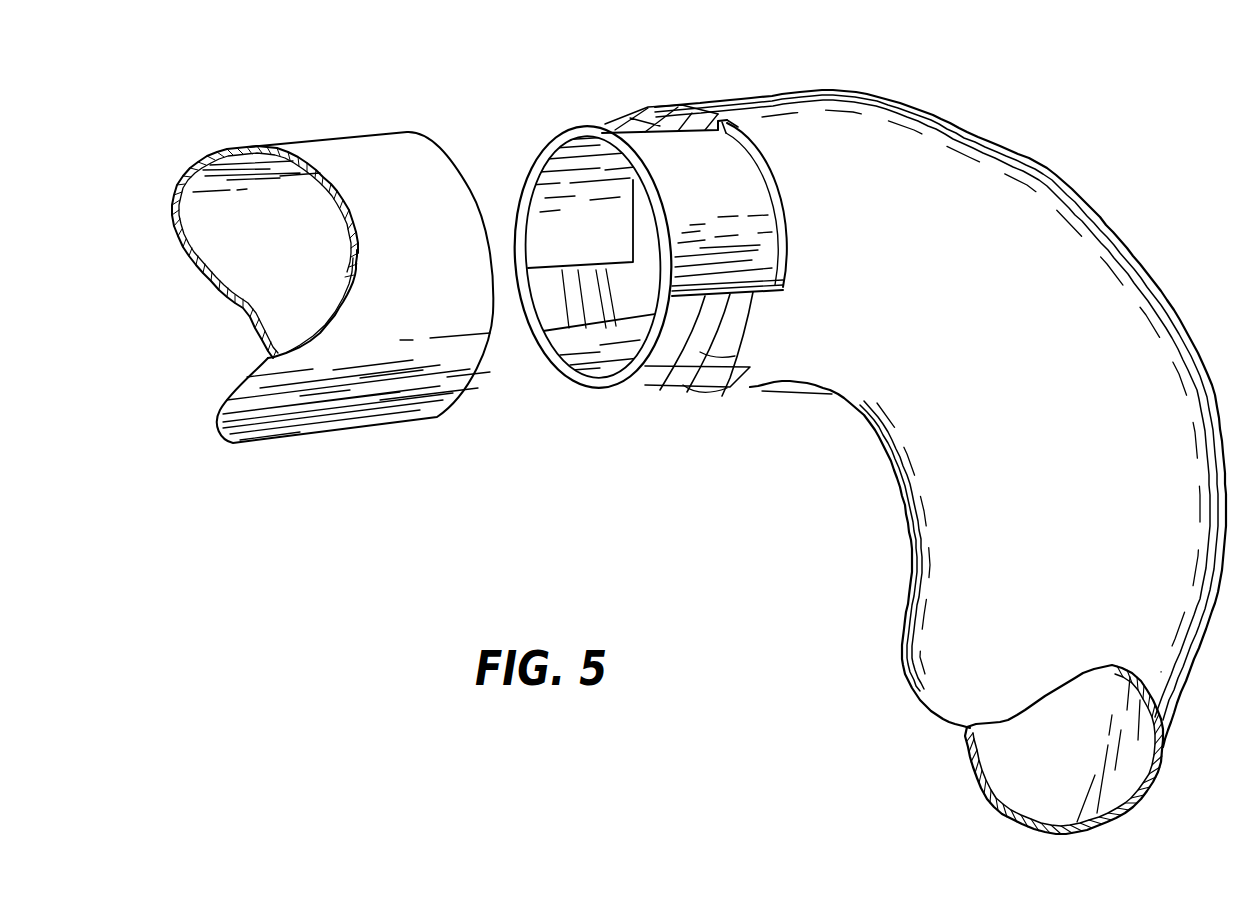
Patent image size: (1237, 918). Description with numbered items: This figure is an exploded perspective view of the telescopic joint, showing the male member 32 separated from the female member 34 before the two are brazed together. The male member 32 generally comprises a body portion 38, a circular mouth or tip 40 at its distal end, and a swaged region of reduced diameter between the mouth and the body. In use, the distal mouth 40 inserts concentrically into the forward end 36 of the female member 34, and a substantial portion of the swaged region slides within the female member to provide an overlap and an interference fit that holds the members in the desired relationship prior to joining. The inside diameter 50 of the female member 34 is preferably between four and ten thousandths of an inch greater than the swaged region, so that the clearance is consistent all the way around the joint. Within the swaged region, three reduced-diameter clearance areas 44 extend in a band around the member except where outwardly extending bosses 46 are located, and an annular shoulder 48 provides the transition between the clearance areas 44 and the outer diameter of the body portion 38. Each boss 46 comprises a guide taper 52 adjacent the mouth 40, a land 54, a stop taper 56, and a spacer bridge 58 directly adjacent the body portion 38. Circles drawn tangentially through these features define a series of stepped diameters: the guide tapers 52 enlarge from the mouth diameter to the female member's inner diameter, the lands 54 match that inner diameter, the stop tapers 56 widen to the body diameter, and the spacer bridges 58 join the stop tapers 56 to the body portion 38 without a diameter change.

The male member 32 is at (866, 431).
The female member 34 is at (332, 298).
The forward end 36 is at (440, 146).
The body portion 38 is at (932, 124).
The mouth 40 is at (553, 150).
The clearance areas 44 is at (712, 150).
The bosses 46 is at (627, 116).
The annular shoulder 48 is at (750, 140).
The inside diameter 50 is at (199, 178).
The guide taper 52 is at (667, 352).
The land 54 is at (697, 352).
The stop taper 56 is at (713, 352).
The spacer bridge 58 is at (750, 346).